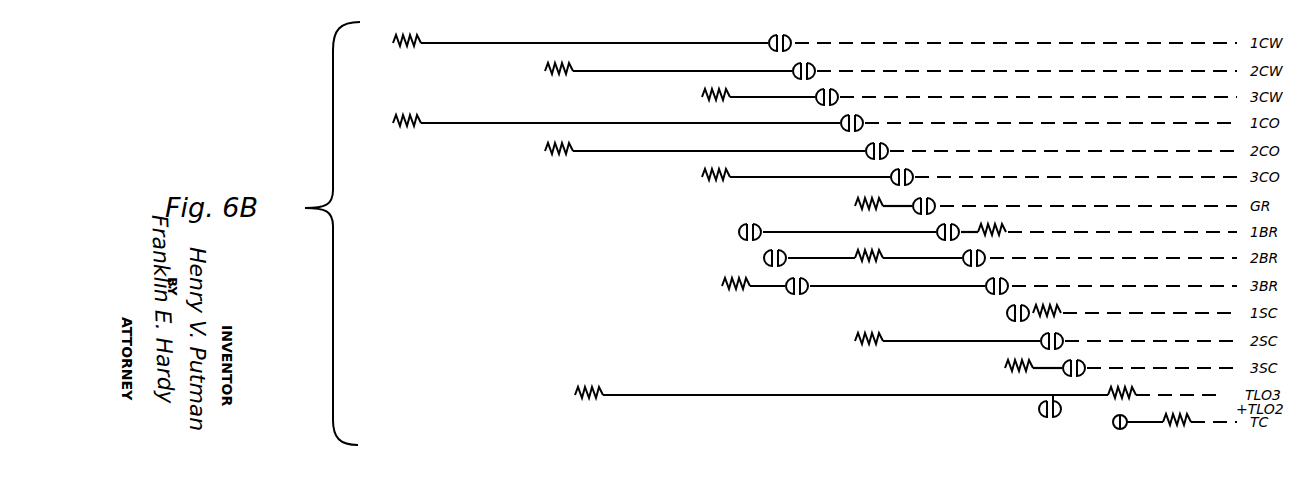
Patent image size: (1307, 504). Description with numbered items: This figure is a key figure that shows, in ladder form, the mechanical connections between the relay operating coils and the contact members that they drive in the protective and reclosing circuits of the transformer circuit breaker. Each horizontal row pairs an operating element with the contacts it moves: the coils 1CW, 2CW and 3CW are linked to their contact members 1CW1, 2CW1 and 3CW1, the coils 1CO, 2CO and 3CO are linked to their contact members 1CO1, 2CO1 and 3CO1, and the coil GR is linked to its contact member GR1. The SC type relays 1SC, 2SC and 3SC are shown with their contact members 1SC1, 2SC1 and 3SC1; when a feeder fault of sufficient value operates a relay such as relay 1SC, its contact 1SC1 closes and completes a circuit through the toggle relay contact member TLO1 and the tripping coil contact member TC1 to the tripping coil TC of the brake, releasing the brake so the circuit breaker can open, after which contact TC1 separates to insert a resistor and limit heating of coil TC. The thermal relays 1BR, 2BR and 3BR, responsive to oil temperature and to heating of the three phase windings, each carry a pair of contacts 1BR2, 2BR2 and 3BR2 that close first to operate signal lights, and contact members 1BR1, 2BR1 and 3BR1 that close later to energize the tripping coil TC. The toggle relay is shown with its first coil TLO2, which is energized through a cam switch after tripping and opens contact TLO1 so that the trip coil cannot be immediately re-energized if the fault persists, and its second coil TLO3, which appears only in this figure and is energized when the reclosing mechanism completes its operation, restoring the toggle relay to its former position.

The first clockwise relay coil 1CW is at (393, 47).
The second clockwise relay coil 2CW is at (541, 65).
The third clockwise relay coil 3CW is at (702, 97).
The first counter relay coil 1CO is at (393, 123).
The second counter relay coil 2CO is at (545, 151).
The third counter relay coil 3CO is at (702, 177).
The GR relay coil GR is at (855, 206).
The thermal relay 1BR is at (1006, 229).
The thermal relay 2BR is at (883, 254).
The thermal relay 3BR is at (722, 287).
The SC type relay 1SC is at (1061, 310).
The second SC relay coil 2SC is at (855, 341).
The third SC relay coil 3SC is at (1005, 368).
The second coil of the toggle relay TLO3 is at (575, 396).
The coil of the toggle relay TLO2 is at (1136, 391).
The toggle relay contact member TLO1 is at (1039, 410).
The tripping coil contact member TC1 is at (1112, 424).
The tripping coil TC is at (1170, 424).
The 1CW1 contact 1CW1 is at (793, 37).
The 2CW1 contact 2CW1 is at (817, 66).
The 3CW1 contact 3CW1 is at (845, 88).
The 1CO1 contact 1CO1 is at (870, 114).
The 2CO1 contact 2CO1 is at (895, 142).
The 3CO1 contact 3CO1 is at (920, 168).
The GR1 contact GR1 is at (937, 201).
The thermal relay contacts 1BR2 is at (738, 233).
The thermal relay contact member 1BR1 is at (936, 228).
The thermal relay contacts 2BR2 is at (763, 259).
The thermal relay contact member 2BR1 is at (987, 253).
The thermal relay contacts 3BR2 is at (810, 282).
The thermal relay contact member 3BR1 is at (1010, 281).
The relay contact member 1SC1 is at (1006, 314).
The 2SC1 contact 2SC1 is at (1070, 331).
The 3SC1 contact 3SC1 is at (1093, 358).